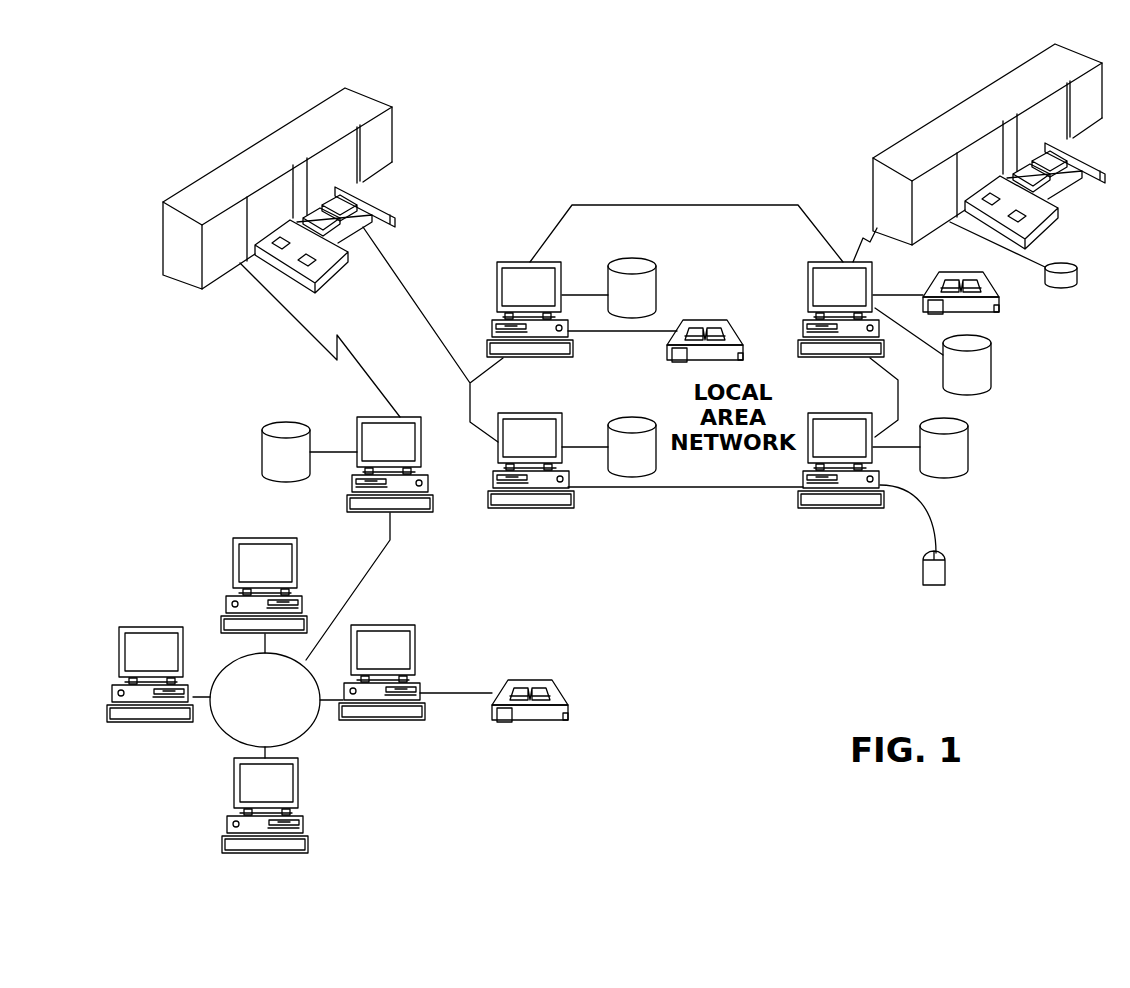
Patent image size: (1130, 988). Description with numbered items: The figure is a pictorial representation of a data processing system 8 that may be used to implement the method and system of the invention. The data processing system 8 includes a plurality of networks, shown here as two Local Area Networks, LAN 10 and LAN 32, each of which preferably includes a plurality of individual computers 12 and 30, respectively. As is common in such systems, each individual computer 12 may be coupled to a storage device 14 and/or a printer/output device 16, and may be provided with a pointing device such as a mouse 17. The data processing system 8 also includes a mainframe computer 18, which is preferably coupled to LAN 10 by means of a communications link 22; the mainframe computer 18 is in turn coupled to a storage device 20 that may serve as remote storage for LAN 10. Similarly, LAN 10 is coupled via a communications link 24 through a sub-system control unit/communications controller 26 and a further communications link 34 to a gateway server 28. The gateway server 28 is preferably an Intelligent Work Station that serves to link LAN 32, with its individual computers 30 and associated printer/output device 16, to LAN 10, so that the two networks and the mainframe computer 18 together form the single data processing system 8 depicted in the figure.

The data processing system 8 is at (745, 197).
The Local Area Network 10 is at (668, 487).
The individual computer 12 is at (514, 262).
The storage device 14 is at (641, 264).
The printer/output device 16 is at (722, 320).
The mouse 17 is at (947, 572).
The mainframe computer 18 is at (950, 111).
The storage device 20 is at (1053, 289).
The communications link 22 is at (863, 240).
The communications link 24 is at (403, 285).
The sub-system control unit/communications controller 26 is at (213, 165).
The gateway server 28 is at (357, 420).
The individual computer 30 is at (232, 560).
The Local Area Network 32 is at (212, 724).
The communications link 34 is at (273, 302).